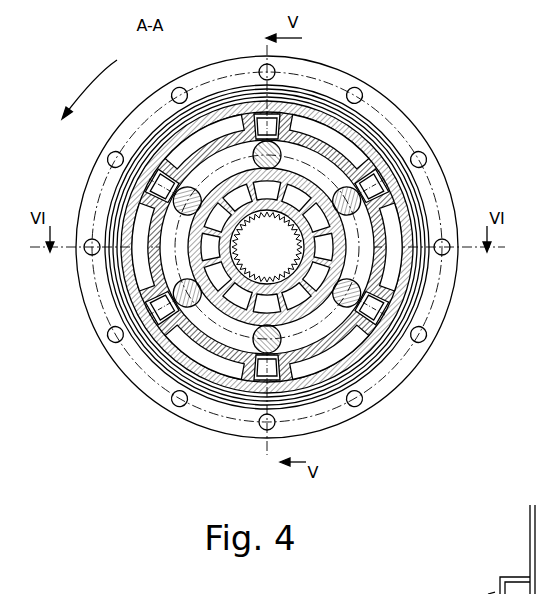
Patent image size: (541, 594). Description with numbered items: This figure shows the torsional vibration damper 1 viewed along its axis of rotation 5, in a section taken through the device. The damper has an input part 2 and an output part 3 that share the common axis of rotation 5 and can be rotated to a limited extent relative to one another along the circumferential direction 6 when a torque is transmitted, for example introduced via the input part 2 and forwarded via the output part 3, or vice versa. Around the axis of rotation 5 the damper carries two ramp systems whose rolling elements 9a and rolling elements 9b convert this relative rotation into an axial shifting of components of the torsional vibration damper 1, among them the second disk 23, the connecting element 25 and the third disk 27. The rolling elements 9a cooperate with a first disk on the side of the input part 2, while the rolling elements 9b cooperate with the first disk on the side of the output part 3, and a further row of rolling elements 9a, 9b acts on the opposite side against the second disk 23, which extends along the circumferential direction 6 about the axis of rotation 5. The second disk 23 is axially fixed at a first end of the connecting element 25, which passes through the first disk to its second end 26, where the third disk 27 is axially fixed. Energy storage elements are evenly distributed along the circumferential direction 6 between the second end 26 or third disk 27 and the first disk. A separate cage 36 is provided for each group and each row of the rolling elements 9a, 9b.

The torsional vibration damper 1 is at (462, 148).
The input part 2 is at (232, 98).
The output part 3 is at (400, 152).
The axis of rotation 5 is at (402, 343).
The circumferential direction 6 is at (89, 89).
The rolling elements 9a is at (413, 176).
The rolling elements 9b is at (135, 152).
The second disk 23 is at (357, 261).
The connecting element 25 is at (172, 296).
The cage 36 is at (300, 90).
The second end 26 is at (525, 566).
The third disk 27 is at (528, 512).